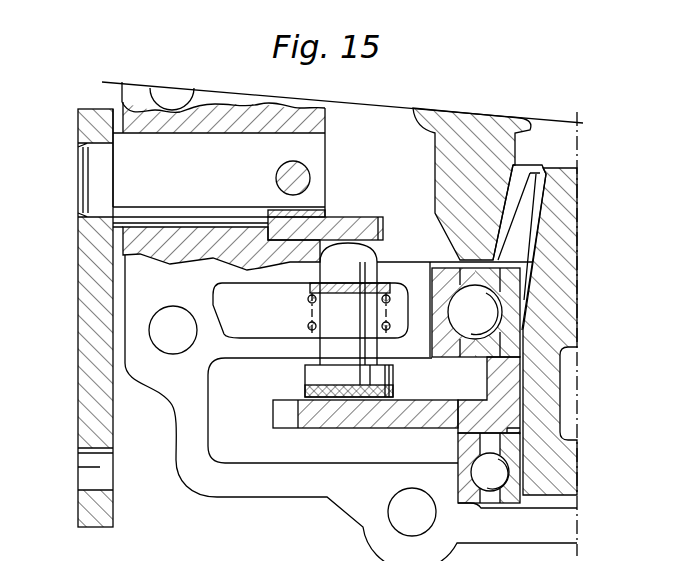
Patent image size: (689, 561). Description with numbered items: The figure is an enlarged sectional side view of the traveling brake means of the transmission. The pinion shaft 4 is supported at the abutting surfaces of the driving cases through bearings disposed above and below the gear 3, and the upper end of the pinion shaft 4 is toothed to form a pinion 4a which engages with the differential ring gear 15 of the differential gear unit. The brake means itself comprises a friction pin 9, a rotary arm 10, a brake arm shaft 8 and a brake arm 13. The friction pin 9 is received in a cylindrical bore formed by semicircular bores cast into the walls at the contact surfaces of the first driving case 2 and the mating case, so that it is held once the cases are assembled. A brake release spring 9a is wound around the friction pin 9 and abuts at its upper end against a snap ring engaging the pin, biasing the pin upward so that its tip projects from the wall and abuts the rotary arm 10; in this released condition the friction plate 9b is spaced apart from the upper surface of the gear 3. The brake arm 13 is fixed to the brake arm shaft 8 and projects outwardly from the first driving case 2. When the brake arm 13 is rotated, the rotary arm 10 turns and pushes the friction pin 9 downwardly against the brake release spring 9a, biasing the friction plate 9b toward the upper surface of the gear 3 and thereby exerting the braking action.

The first driving case 2 is at (275, 487).
The gear 3 is at (273, 410).
The pinion shaft 4 is at (555, 458).
The pinion 4a is at (526, 226).
The brake arm shaft 8 is at (90, 190).
The friction pin 9 is at (352, 336).
The brake release spring 9a is at (312, 324).
The friction plate 9b is at (393, 392).
The rotary arm 10 is at (356, 228).
The brake arm 13 is at (78, 338).
The differential ring gear 15 is at (437, 152).